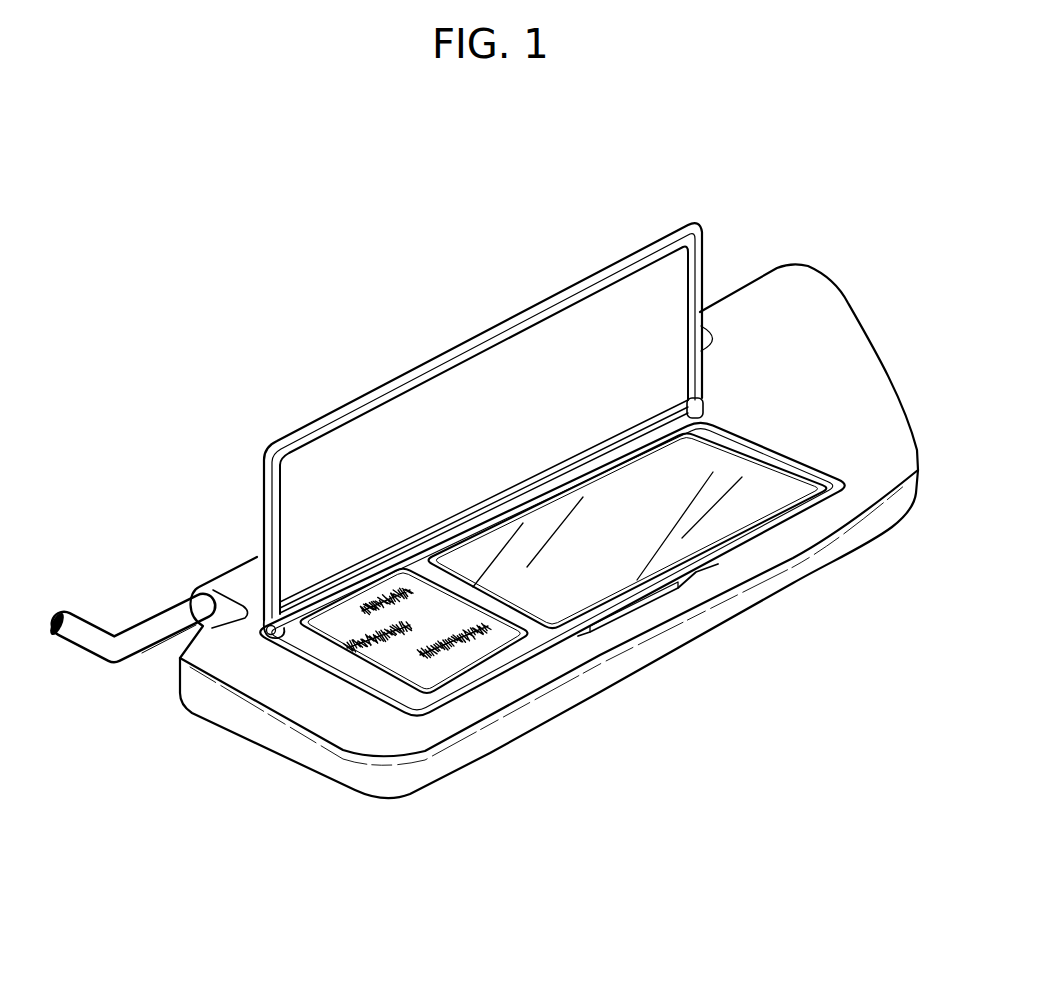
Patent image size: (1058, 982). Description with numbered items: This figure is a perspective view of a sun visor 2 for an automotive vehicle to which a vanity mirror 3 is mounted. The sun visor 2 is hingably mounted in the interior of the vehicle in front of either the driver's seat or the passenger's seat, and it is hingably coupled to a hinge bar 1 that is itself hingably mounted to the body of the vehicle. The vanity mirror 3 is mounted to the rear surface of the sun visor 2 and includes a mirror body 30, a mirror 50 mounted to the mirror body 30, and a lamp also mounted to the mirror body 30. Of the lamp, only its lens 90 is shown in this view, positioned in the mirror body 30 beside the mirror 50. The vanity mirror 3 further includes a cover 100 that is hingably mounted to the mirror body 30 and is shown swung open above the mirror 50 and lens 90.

The hinge bar 1 is at (122, 661).
The sun visor 2 is at (836, 327).
The vanity mirror 3 is at (830, 463).
The mirror body 30 is at (713, 567).
The mirror 50 is at (680, 539).
The lens 90 is at (443, 675).
The cover 100 is at (417, 364).